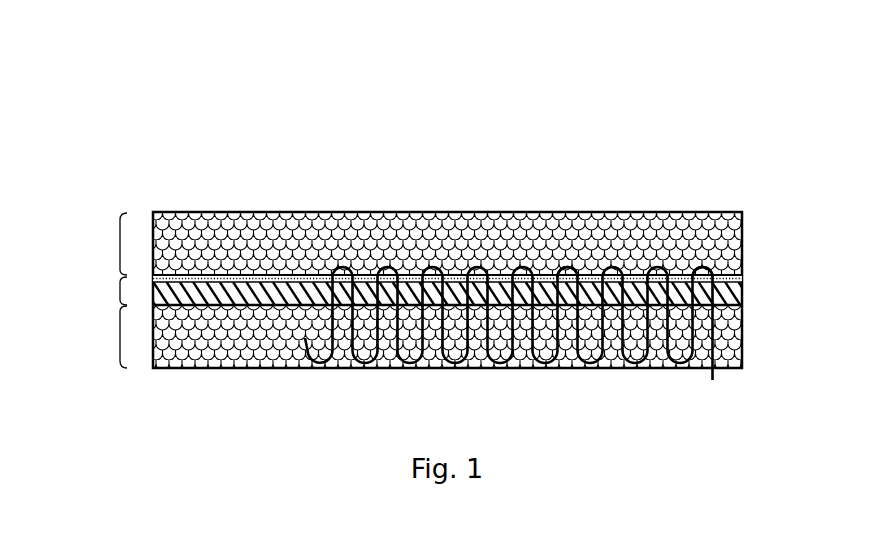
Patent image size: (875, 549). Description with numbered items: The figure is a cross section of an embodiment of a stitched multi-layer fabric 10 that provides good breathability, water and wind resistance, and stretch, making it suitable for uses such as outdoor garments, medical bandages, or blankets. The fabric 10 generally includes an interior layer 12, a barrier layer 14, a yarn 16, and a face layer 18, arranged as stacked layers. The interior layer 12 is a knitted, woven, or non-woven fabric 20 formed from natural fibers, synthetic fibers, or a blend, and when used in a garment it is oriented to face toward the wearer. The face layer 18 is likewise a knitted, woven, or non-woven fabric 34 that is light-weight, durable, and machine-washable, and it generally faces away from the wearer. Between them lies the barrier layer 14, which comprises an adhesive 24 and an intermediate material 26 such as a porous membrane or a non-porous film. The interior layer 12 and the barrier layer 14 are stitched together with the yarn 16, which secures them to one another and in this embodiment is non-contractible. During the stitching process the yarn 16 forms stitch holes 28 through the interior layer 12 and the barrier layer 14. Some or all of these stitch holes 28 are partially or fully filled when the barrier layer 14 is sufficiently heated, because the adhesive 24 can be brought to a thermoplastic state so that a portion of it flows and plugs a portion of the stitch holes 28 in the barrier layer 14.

The stitched fabric 10 is at (297, 88).
The interior layer 12 is at (120, 337).
The barrier layer 14 is at (120, 290).
The yarn 16 is at (712, 380).
The face layer 18 is at (120, 243).
The fabric 20 is at (742, 340).
The adhesive 24 is at (742, 277).
The intermediate material 26 is at (742, 295).
The stitch holes 28 is at (578, 275).
The fabric 34 is at (742, 228).